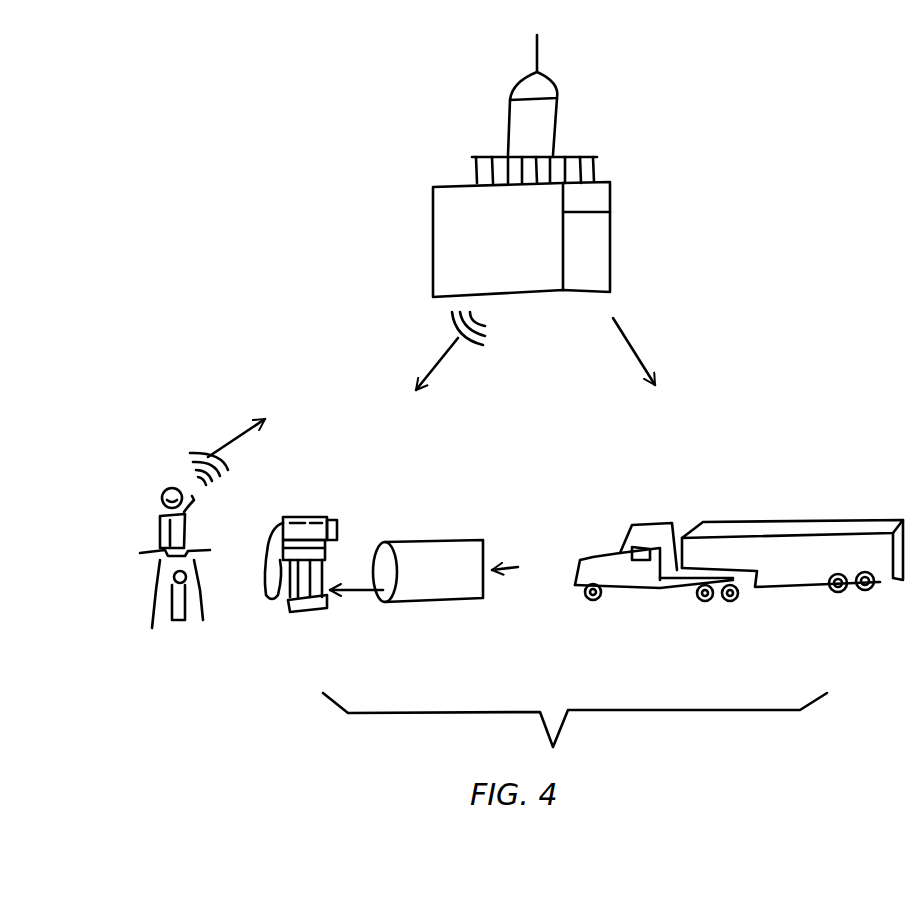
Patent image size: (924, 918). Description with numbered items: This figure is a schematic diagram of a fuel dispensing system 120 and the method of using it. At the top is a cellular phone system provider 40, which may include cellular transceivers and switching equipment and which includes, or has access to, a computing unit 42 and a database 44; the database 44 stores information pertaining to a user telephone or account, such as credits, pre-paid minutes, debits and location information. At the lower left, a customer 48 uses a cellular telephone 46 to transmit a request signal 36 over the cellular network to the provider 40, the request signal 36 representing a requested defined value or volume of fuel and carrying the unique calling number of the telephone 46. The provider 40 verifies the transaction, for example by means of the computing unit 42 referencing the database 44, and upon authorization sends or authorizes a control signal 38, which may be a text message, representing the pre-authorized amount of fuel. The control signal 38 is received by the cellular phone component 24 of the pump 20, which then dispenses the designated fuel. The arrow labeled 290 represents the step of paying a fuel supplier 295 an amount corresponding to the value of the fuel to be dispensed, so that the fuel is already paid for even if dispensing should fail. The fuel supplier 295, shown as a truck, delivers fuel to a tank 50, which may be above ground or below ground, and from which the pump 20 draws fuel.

The fuel dispensing system 120 is at (110, 124).
The cellular phone system provider 40 is at (428, 150).
The database 44 is at (596, 200).
The computing unit 42 is at (596, 236).
The control signal 38 is at (497, 346).
The step of paying a fuel supplier 290 is at (640, 341).
The request signal 36 is at (204, 447).
The cellular telephone 46 is at (194, 504).
The customer 48 is at (125, 563).
The pump 20 is at (292, 502).
The cellular phone component 24 is at (337, 518).
The tank 50 is at (447, 560).
The fuel supplier 295 is at (805, 548).